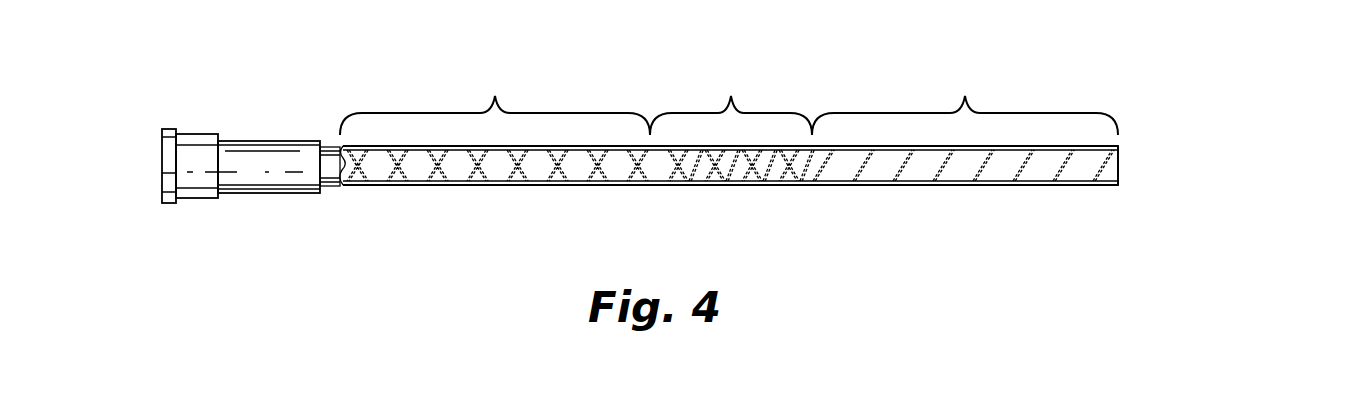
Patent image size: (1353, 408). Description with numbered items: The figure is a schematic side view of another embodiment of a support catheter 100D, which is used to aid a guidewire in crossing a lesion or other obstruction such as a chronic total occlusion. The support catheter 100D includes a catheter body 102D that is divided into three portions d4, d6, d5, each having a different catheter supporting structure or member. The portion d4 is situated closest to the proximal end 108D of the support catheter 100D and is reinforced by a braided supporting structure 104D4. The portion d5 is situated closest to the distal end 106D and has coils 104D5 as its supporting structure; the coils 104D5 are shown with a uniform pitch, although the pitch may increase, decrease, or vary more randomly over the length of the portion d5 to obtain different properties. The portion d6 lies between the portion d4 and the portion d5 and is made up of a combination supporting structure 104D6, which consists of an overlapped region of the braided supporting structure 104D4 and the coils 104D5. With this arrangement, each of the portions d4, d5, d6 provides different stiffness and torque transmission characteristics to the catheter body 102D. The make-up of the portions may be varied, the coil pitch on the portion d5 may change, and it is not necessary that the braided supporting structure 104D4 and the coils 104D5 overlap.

The support catheter 100D is at (343, 104).
The catheter body 102D is at (613, 186).
The braided supporting structure 104D4 is at (464, 172).
The combination supporting structure 104D6 is at (737, 170).
The coils 104D5 is at (970, 172).
The distal end 106D is at (1118, 192).
The proximal end 108D is at (328, 198).
The portion d4 is at (495, 98).
The portion d6 is at (731, 98).
The portion d5 is at (965, 98).